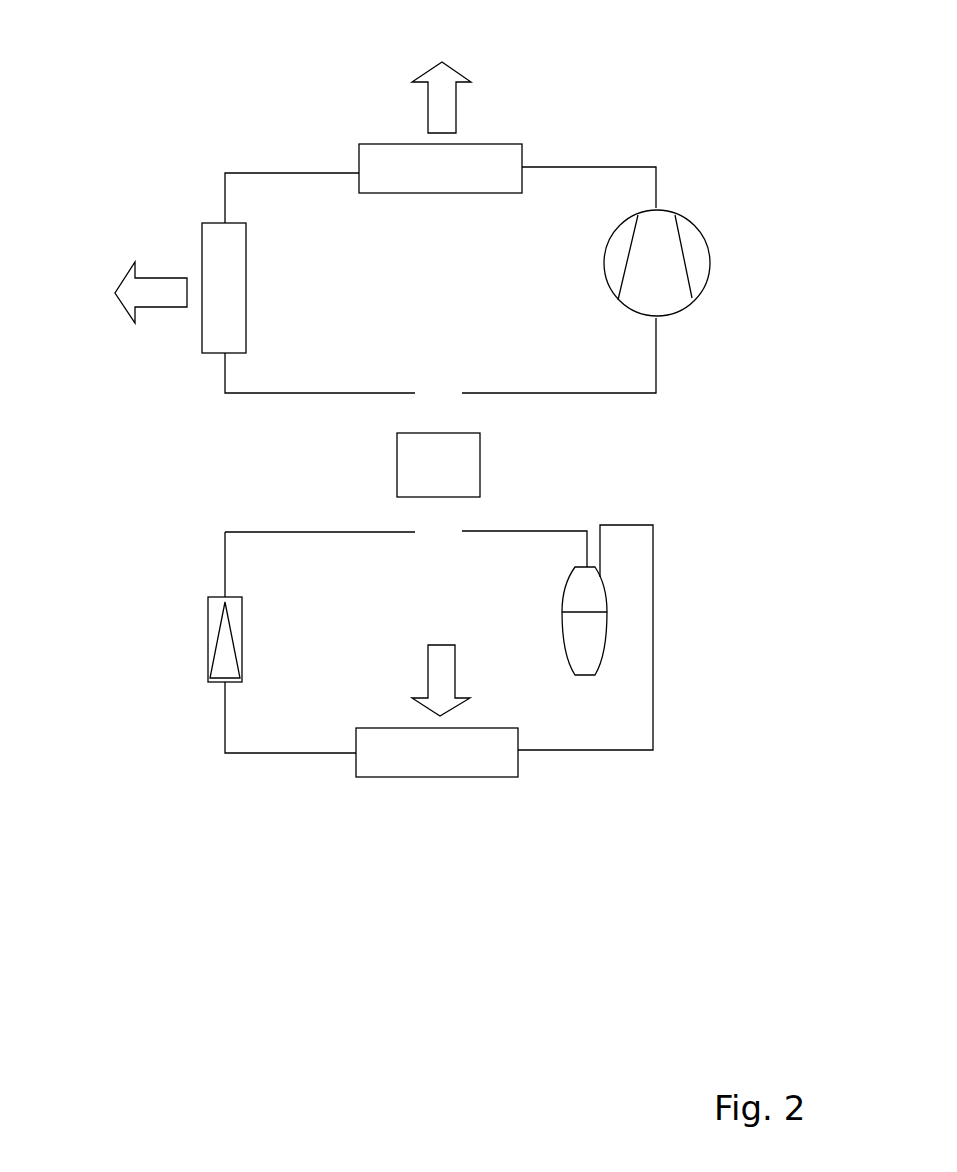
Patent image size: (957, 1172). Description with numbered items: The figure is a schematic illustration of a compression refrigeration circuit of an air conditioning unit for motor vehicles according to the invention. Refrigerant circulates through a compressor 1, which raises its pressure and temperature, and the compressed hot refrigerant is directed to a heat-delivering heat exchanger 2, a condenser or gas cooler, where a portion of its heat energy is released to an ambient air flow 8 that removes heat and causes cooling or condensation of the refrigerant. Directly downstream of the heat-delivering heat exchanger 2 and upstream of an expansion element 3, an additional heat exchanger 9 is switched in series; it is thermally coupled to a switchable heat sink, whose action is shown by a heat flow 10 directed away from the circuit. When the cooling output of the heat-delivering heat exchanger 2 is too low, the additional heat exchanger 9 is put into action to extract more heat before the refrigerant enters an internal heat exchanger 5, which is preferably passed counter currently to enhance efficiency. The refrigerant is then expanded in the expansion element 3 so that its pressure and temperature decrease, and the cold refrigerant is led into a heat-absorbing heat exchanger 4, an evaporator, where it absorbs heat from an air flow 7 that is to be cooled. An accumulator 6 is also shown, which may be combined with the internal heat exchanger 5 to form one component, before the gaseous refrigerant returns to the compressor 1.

The compressor 1 is at (693, 257).
The heat-delivering heat exchanger 2 is at (497, 157).
The expansion element 3 is at (213, 623).
The heat-absorbing heat exchanger 4 is at (452, 763).
The internal heat exchanger 5 is at (472, 452).
The accumulator 6 is at (587, 643).
The air flow 7 is at (437, 667).
The ambient air flow 8 is at (437, 115).
The additional heat exchanger 9 is at (218, 240).
The heat flow 10 is at (162, 275).